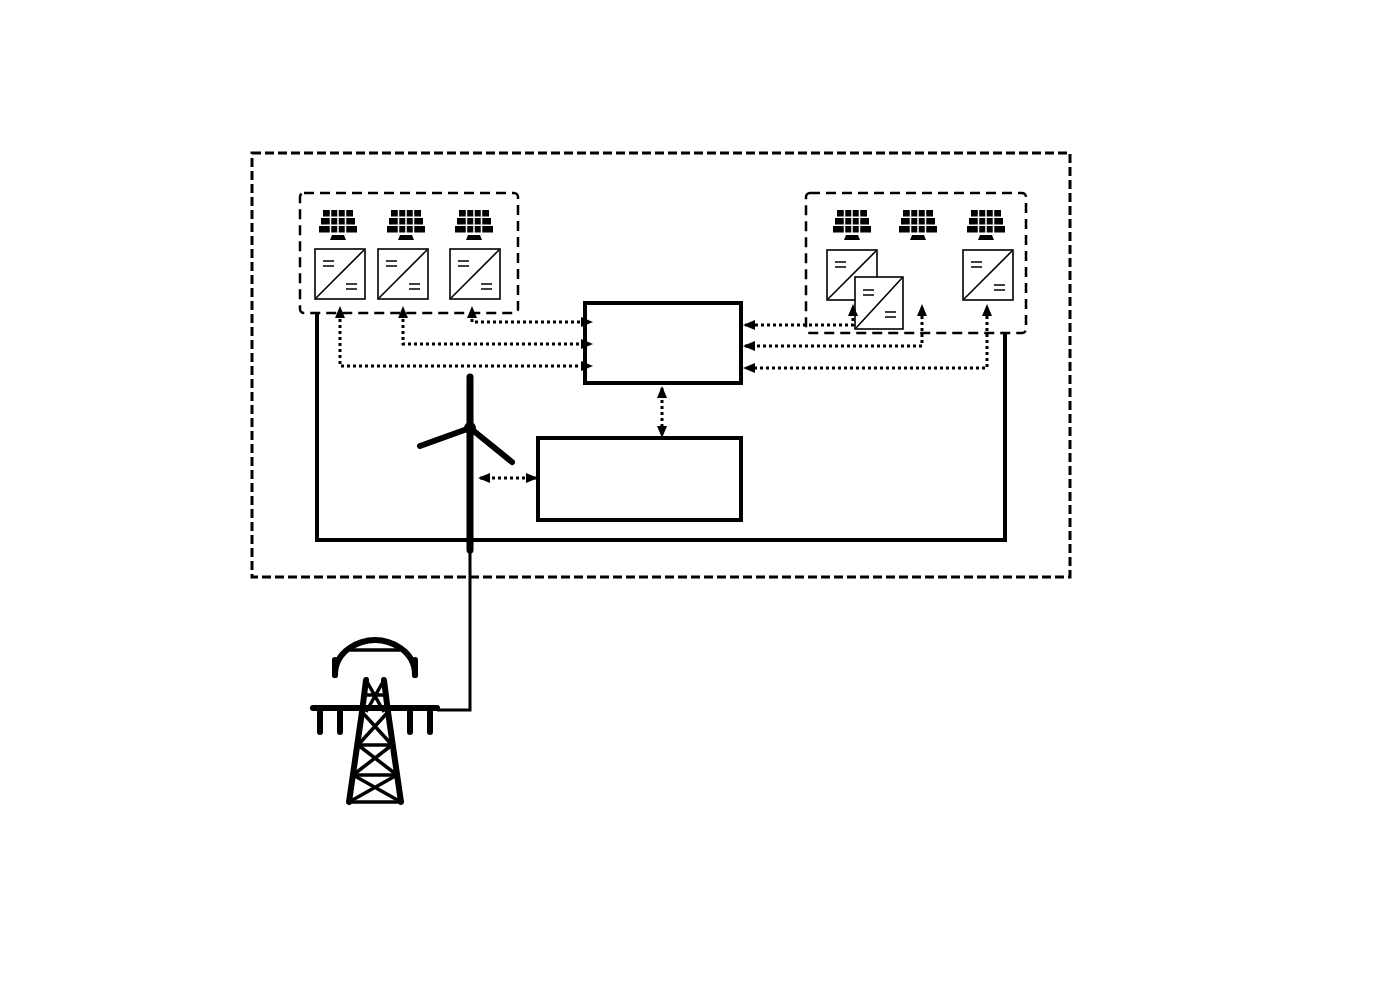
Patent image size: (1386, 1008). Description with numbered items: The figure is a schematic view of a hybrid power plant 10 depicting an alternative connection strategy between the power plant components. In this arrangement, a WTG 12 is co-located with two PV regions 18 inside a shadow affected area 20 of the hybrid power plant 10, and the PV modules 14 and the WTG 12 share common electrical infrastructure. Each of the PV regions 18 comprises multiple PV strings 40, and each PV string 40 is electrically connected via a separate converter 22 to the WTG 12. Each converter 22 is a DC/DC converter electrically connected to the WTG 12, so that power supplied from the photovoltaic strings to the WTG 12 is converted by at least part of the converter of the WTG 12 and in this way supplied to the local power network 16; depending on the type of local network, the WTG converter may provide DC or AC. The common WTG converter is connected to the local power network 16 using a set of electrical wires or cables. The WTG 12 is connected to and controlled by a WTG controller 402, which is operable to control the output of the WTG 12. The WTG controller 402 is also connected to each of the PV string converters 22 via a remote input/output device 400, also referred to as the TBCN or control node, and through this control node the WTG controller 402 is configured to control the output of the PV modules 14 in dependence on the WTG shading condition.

The hybrid power plant 10 is at (1236, 271).
The WTG 12 is at (462, 428).
The PV modules 14 is at (488, 214).
The local power network 16 is at (475, 642).
The PV regions 18 is at (300, 208).
The shadow affected area 20 is at (1072, 183).
The converter 22 is at (315, 263).
The PV strings 40 is at (340, 212).
The remote input/output (I/O) device 400 is at (671, 303).
The WTG controller 402 is at (737, 476).